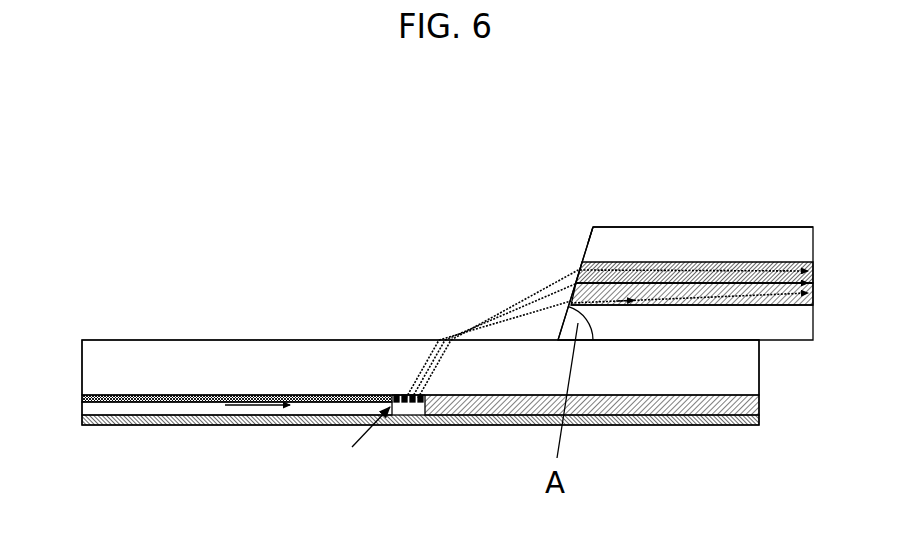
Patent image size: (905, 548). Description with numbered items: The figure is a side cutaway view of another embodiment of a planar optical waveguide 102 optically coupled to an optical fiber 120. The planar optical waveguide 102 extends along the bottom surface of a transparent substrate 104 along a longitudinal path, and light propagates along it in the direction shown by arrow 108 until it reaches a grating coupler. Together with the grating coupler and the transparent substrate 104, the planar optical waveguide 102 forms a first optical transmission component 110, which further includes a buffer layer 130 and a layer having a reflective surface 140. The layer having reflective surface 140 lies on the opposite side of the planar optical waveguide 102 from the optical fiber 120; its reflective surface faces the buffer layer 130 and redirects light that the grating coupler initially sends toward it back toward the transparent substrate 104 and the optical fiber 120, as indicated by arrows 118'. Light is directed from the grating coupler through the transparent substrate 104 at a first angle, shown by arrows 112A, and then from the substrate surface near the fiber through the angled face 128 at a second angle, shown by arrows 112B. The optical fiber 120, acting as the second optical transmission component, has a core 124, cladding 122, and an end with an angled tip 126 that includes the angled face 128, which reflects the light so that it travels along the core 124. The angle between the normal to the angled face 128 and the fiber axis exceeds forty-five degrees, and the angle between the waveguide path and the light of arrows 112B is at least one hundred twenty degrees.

The planar optical waveguide 102 is at (164, 395).
The transparent substrate 104 is at (635, 368).
The arrow 108 is at (258, 414).
The first optical transmission component 110 is at (688, 373).
The arrows 112A is at (417, 367).
The arrows 112B is at (484, 309).
The arrows 118' is at (439, 442).
The optical fiber 120 is at (629, 228).
The cladding 122 is at (767, 270).
The core 124 is at (694, 277).
The angled tip 126 is at (589, 238).
The angled face 128 is at (582, 258).
The buffer layer 130 is at (703, 402).
The layer having a reflective surface 140 is at (600, 427).